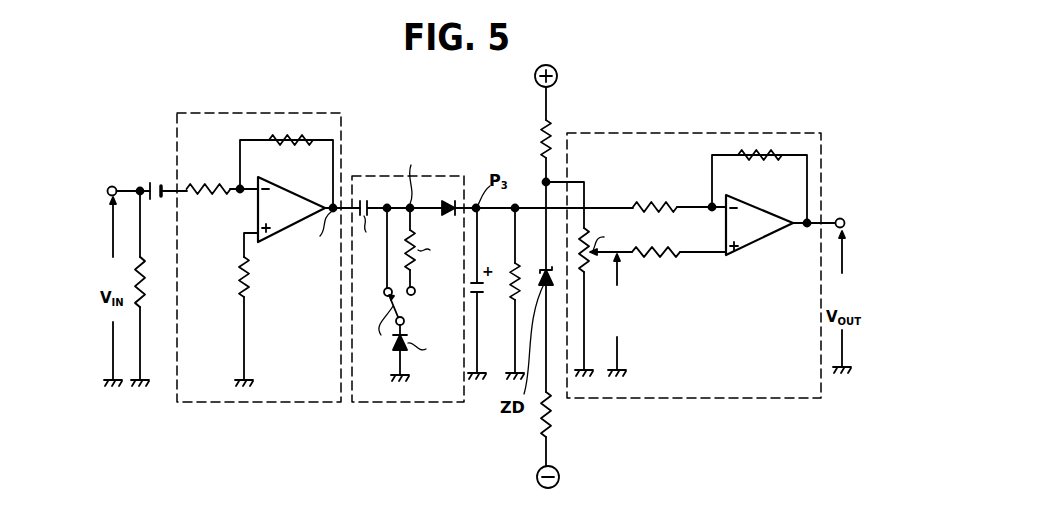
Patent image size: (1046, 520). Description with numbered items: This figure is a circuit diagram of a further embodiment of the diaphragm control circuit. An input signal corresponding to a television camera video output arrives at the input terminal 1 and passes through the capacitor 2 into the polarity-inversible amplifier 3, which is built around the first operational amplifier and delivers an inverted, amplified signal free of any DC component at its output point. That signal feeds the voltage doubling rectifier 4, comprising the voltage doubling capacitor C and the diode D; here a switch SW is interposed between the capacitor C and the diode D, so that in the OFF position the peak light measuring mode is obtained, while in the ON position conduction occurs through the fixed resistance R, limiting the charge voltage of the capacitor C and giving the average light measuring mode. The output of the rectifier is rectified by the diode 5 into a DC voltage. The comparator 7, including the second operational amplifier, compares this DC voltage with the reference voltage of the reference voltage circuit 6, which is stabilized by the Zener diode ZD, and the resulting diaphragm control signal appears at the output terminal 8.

The input terminal 1 is at (112, 186).
The capacitor 2 is at (155, 182).
The polarity-inversible amplifier 3 is at (263, 113).
The voltage doubling rectifier 4 is at (396, 402).
The diode 5 is at (453, 199).
The reference voltage circuit 6 is at (553, 126).
The comparator 7 is at (684, 133).
The output terminal 8 is at (840, 218).